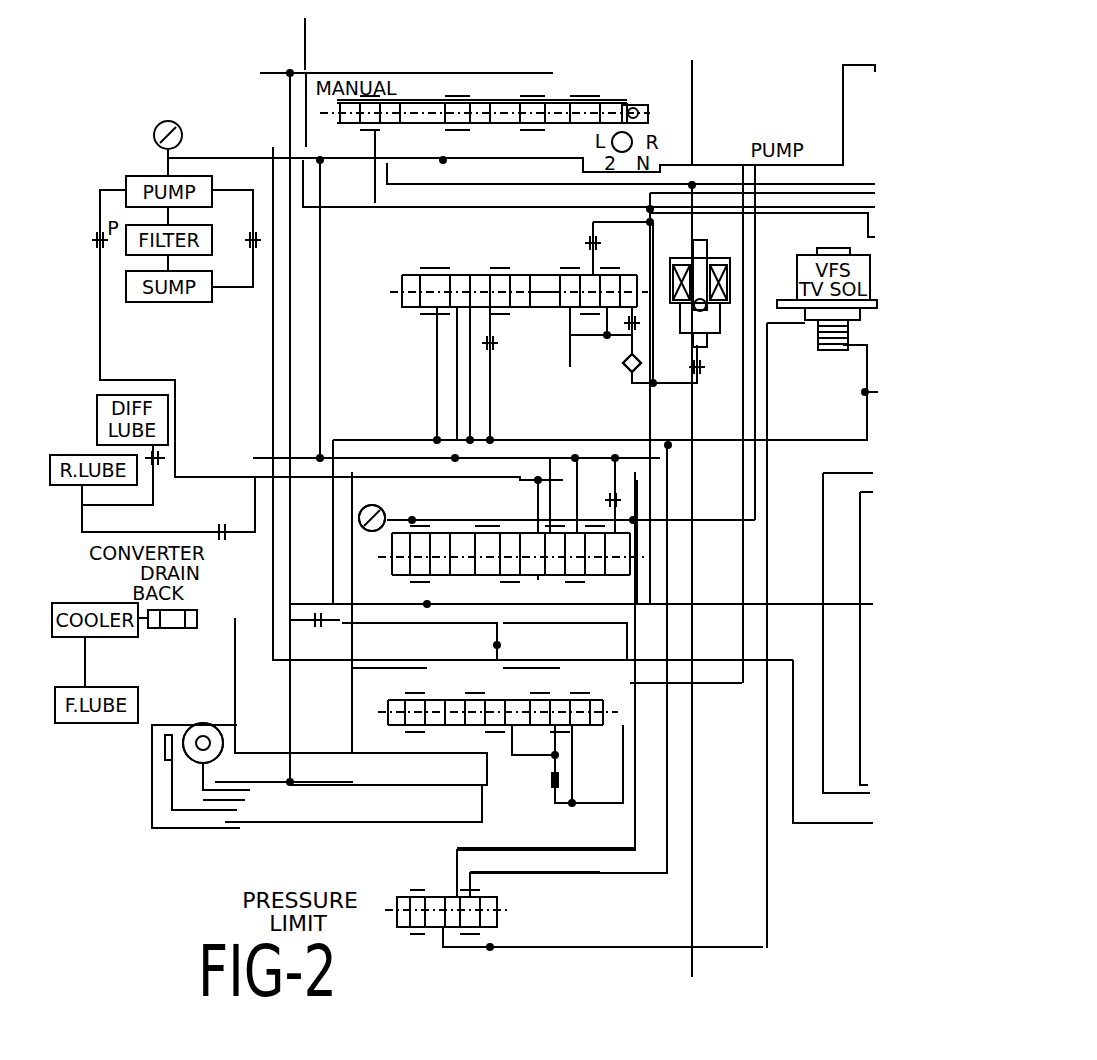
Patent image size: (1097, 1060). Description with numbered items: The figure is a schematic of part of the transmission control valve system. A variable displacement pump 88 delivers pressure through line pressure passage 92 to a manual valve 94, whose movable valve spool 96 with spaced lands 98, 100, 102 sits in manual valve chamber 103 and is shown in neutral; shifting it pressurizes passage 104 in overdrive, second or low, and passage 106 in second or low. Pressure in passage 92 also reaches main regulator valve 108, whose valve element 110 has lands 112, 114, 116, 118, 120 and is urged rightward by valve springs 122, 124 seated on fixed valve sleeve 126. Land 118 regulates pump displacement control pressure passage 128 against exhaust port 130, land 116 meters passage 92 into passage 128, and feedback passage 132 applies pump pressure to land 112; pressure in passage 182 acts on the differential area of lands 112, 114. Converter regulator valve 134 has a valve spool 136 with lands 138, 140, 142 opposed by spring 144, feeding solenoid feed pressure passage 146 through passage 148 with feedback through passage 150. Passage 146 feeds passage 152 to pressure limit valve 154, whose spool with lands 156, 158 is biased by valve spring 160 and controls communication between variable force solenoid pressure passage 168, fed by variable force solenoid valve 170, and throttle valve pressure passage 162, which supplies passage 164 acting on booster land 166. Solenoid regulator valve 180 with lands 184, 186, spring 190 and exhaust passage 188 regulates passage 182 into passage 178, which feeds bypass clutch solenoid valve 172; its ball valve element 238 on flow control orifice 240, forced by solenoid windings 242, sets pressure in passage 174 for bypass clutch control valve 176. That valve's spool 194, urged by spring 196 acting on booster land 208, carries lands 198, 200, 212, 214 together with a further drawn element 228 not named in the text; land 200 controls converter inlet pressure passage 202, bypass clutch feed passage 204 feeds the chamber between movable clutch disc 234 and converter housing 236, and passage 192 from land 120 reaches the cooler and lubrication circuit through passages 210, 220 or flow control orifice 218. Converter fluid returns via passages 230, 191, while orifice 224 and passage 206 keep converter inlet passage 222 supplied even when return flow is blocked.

The positive displacement pump 88 is at (143, 176).
The manual valve 94 is at (490, 95).
The valve land 98 is at (412, 126).
The manual valve chamber 103 is at (445, 126).
The valve land 100 is at (492, 126).
The valve land 102 is at (540, 126).
The movable valve spool 96 is at (598, 128).
The passage 106 is at (500, 186).
The passage 104 is at (553, 193).
The line pressure passage 92 is at (338, 165).
The converter regulator valve 134 is at (425, 272).
The valve spool 136 is at (468, 275).
The passage 182 is at (592, 224).
The valve spring 190 is at (538, 275).
The solenoid regulator valve 180 is at (620, 275).
The bypass clutch solenoid valve 172 is at (688, 258).
The solenoid windings 242 is at (712, 268).
The variable force solenoid valve 170 is at (795, 262).
The spring 144 is at (402, 292).
The land 138 is at (437, 312).
The land 142 is at (510, 308).
The passage 148 is at (457, 390).
The land 140 is at (492, 343).
The pump displacement control pressure passage 128 is at (432, 440).
The feedback passage 150 is at (490, 360).
The exhaust passage 188 is at (570, 340).
The land 184 is at (607, 336).
The land 186 is at (628, 368).
The flow control orifice 240 is at (690, 367).
The ball valve element 238 is at (712, 312).
The passage 178 is at (668, 385).
The converter fluid return passage 191 is at (372, 440).
The solenoid feed pressure passage 146 is at (500, 440).
The land 114 is at (565, 458).
The fixed valve sleeve 126 is at (418, 520).
The land 120 is at (492, 533).
The land 118 is at (518, 533).
The feedback passage 132 is at (622, 499).
The passage 164 is at (392, 556).
The valve land 166 is at (400, 575).
The valve spring 124 is at (440, 575).
The valve spring 122 is at (447, 575).
The exhaust port 130 is at (506, 575).
The valve element 110 is at (551, 575).
The land 112 is at (598, 575).
The main regulator valve 108 is at (644, 562).
The passage 174 is at (743, 560).
The orifice 224 is at (318, 614).
The valve spring 196 is at (395, 700).
The land 116 is at (538, 580).
The passage 192 is at (627, 630).
The passage 206 is at (288, 690).
The passage 210 is at (236, 725).
The passage 220 is at (274, 753).
The pressure booster valve land 208 is at (388, 712).
The land 198 is at (478, 700).
The land 200 is at (498, 700).
The bypass clutch control valve 176 is at (617, 717).
The valve land 228 is at (458, 726).
The land 212 is at (510, 726).
The land 214 is at (590, 726).
The flow control orifice 218 is at (560, 780).
The valve spool 194 is at (465, 754).
The passage 230 is at (345, 782).
The movable clutch disc 234 is at (162, 770).
The converter housing 236 is at (152, 790).
The converter inlet passage 222 is at (256, 823).
The converter bypass clutch feed passage 204 is at (300, 823).
The converter inlet pressure passage 202 is at (505, 786).
The throttle valve pressure passage 162 is at (570, 847).
The pressure limit valve 154 is at (445, 896).
The valve spring 160 is at (397, 910).
The land 158 is at (497, 900).
The passage 152 is at (570, 873).
The variable force solenoid pressure passage 168 is at (530, 946).
The land 156 is at (431, 928).